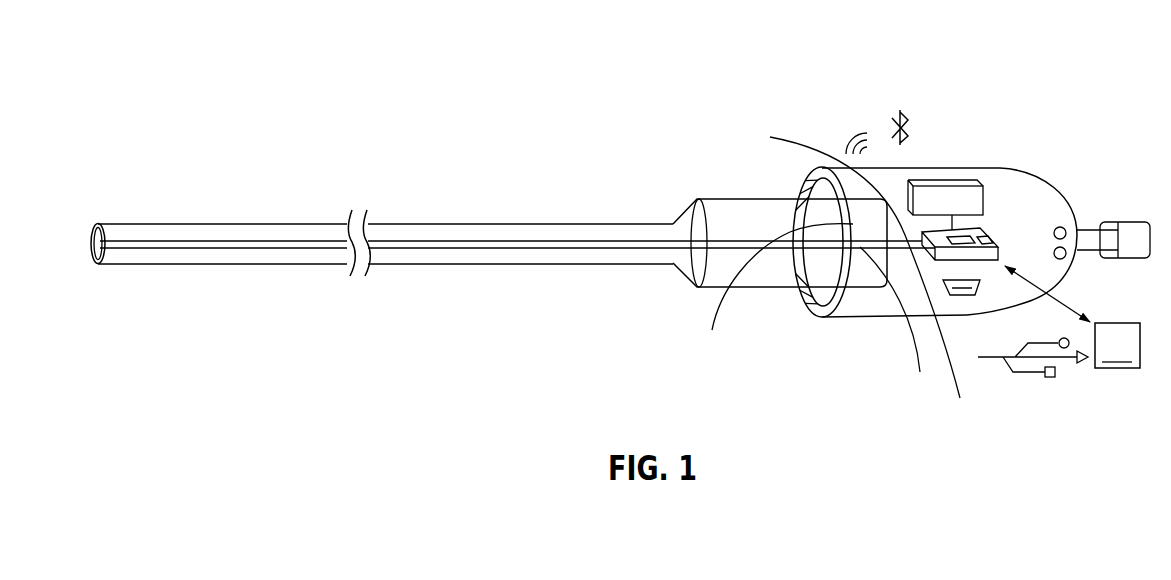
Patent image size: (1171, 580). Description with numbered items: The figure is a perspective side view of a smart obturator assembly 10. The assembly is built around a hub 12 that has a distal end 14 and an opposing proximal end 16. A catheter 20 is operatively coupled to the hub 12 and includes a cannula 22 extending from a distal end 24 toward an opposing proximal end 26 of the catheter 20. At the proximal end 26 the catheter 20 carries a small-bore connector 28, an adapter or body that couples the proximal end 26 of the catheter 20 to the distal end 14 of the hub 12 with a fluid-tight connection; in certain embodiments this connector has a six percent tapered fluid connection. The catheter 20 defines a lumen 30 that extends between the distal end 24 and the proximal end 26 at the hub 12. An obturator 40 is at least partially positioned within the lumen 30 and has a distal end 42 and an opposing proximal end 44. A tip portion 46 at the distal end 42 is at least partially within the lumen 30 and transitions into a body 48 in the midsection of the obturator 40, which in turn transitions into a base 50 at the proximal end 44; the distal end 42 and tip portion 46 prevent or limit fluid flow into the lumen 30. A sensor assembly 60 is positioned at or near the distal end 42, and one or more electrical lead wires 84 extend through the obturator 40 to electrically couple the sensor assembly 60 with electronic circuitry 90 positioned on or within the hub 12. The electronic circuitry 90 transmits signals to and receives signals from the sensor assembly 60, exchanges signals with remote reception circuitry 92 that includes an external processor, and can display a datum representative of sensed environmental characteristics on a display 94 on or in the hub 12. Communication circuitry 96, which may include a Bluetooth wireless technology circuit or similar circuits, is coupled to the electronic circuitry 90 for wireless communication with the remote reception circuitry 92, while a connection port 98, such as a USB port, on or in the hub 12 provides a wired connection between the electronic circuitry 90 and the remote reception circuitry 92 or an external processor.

The smart obturator assembly 10 is at (945, 106).
The hub 12 is at (852, 320).
The distal end 14 is at (818, 340).
The proximal end 16 is at (1039, 112).
The catheter 20 is at (425, 222).
The cannula 22 is at (400, 266).
The distal end 24 is at (129, 274).
The proximal end 26 is at (785, 310).
The small-bore connector 28 is at (717, 199).
The lumen 30 is at (604, 239).
The obturator 40 is at (648, 243).
The distal end 42 is at (203, 221).
The proximal end 44 is at (897, 328).
The tip portion 46 is at (100, 221).
The body 48 is at (564, 232).
The base 50 is at (775, 293).
The sensor assembly 60 is at (95, 244).
The electrical lead wire 84 is at (856, 279).
The electronic circuitry 90 is at (994, 238).
The remote reception circuitry 92 is at (1072, 317).
The display 94 is at (936, 190).
The communication circuitry 96 is at (987, 234).
The connection port 98 is at (962, 296).